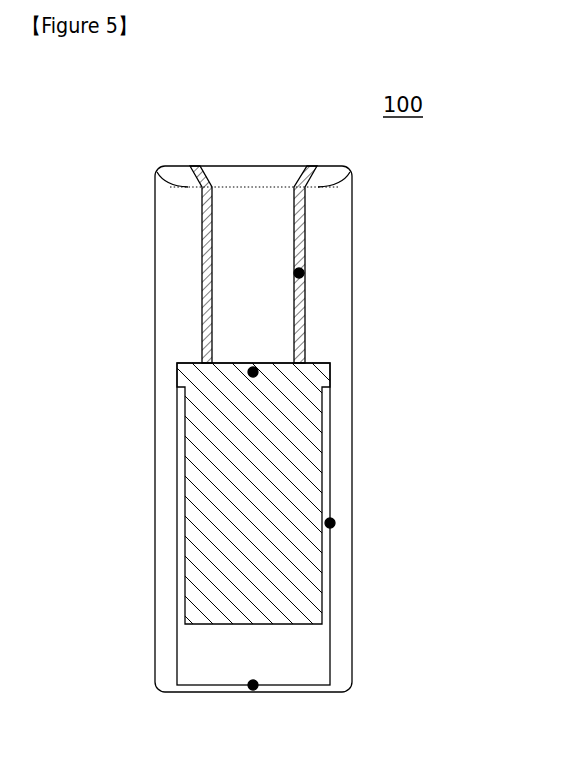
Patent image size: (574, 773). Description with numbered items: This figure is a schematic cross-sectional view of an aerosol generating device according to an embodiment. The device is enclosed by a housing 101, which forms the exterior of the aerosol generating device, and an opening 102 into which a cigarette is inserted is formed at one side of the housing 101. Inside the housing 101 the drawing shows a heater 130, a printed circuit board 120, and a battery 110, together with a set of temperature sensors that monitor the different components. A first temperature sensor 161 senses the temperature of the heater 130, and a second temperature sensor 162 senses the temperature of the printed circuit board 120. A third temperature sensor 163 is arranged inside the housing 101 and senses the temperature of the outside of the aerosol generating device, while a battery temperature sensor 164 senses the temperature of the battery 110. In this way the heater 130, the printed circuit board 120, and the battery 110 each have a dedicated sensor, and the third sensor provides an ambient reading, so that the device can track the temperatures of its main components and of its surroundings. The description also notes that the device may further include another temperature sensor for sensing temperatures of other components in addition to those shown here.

The housing 101 is at (345, 221).
The opening 102 is at (255, 172).
The battery 110 is at (188, 652).
The printed circuit board 120 is at (197, 505).
The heater 130 is at (202, 273).
The first temperature sensor 161 is at (304, 273).
The second temperature sensor 162 is at (258, 372).
The third temperature sensor 163 is at (253, 690).
The battery temperature sensor 164 is at (335, 523).